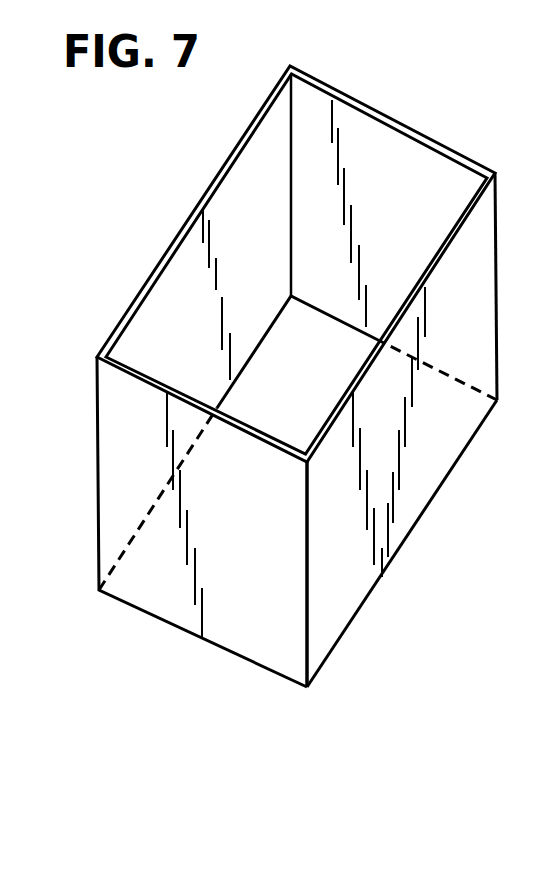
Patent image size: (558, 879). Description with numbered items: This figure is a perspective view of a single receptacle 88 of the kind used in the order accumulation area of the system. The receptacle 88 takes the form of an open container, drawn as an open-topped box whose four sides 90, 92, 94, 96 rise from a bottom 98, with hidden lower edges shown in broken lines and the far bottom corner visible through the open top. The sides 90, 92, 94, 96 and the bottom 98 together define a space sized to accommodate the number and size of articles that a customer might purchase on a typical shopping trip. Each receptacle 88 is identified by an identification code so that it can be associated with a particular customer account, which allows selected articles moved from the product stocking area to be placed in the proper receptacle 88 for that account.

The receptacle 88 is at (399, 552).
The side 90 is at (442, 473).
The side 92 is at (488, 302).
The side 94 is at (99, 525).
The side 96 is at (127, 315).
The bottom 98 is at (295, 332).